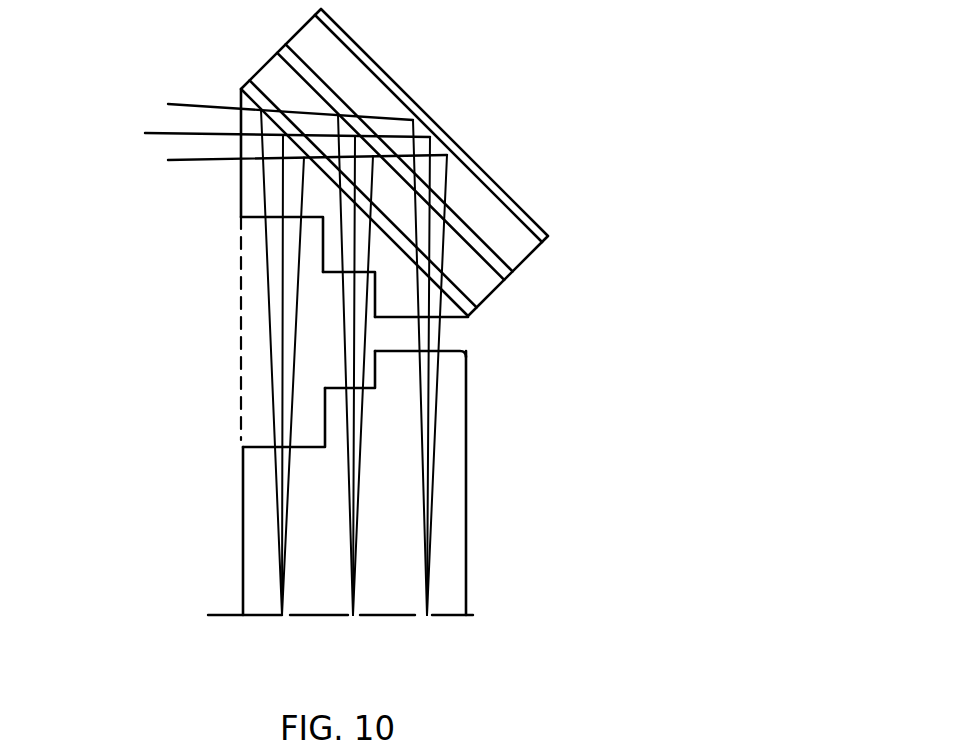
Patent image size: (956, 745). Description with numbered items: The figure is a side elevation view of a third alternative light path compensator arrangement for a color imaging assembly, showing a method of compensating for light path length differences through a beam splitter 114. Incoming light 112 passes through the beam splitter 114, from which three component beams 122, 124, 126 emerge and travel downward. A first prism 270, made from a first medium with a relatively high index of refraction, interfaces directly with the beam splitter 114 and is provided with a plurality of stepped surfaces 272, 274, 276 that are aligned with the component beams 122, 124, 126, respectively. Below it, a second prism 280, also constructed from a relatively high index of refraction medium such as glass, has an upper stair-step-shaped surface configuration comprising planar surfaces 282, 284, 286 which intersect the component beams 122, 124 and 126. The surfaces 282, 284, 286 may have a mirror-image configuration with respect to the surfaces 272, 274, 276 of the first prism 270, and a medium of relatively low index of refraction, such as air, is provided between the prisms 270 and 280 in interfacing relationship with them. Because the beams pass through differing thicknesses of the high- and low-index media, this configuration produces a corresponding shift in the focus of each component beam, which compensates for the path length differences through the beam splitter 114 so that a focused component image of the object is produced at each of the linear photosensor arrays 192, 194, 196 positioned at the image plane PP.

The incident light beam 112 is at (145, 133).
The beam splitter 114 is at (387, 70).
The component beam 122 is at (490, 367).
The component beam 124 is at (424, 527).
The component beam 126 is at (282, 537).
The linear photosensor array 192 is at (422, 618).
The linear photosensor array 194 is at (350, 617).
The linear photosensor array 196 is at (282, 617).
The first prism 270 is at (336, 264).
The stepped surface 272 is at (443, 318).
The stepped surface 274 is at (350, 272).
The stepped surface 276 is at (308, 222).
The second prism 280 is at (363, 479).
The planar surface 282 is at (466, 351).
The planar surface 284 is at (336, 388).
The planar surface 286 is at (267, 446).
The image plane PP is at (391, 618).